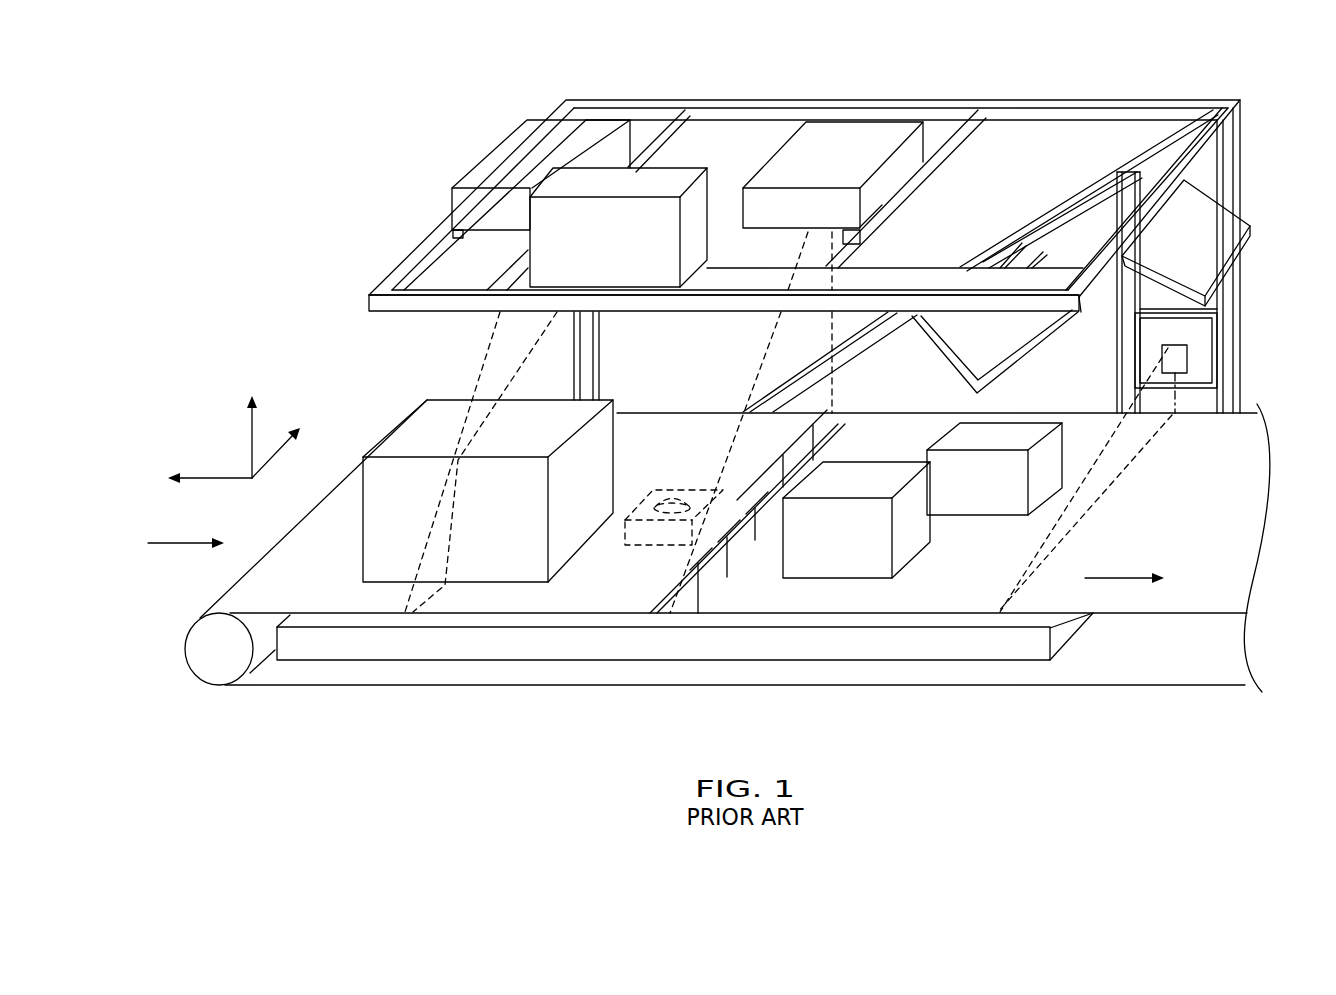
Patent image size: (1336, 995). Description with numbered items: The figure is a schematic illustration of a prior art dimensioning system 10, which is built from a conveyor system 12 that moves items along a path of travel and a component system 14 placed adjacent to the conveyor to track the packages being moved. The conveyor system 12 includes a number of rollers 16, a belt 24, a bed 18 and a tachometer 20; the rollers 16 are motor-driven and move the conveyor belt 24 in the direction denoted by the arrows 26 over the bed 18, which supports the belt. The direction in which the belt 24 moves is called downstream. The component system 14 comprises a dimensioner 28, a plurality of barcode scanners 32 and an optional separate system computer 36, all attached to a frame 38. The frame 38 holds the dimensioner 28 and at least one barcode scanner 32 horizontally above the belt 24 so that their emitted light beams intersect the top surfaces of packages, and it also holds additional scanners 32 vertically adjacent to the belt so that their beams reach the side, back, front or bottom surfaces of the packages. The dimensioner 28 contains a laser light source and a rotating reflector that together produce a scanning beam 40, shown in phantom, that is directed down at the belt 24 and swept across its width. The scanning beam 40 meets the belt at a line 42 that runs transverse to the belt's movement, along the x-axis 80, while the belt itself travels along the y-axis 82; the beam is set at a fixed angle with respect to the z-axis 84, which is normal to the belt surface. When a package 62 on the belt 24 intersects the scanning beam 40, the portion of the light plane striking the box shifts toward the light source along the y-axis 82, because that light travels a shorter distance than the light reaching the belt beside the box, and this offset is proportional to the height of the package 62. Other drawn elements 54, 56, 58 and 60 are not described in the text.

The dimensioning system 10 is at (246, 332).
The conveyor system 12 is at (1246, 511).
The component system 14 is at (1272, 283).
The rollers 16 is at (217, 673).
The bed 18 is at (420, 650).
The tachometer 20 is at (678, 489).
The belt 24 is at (848, 602).
The arrows 26 is at (183, 545).
The dimensioner 28 is at (500, 155).
The barcode scanners 32 is at (832, 136).
The system computer 36 is at (612, 277).
The frame 38 is at (1155, 107).
The scanning beam 40 is at (480, 372).
The line 42 is at (447, 585).
The light curtain 54 is at (708, 576).
The light beam 56 is at (1125, 467).
The controller 58 is at (1013, 433).
The controller 60 is at (858, 478).
The package 62 is at (600, 470).
The x-axis 80 is at (290, 468).
The y-axis 82 is at (207, 497).
The z-axis 84 is at (233, 438).